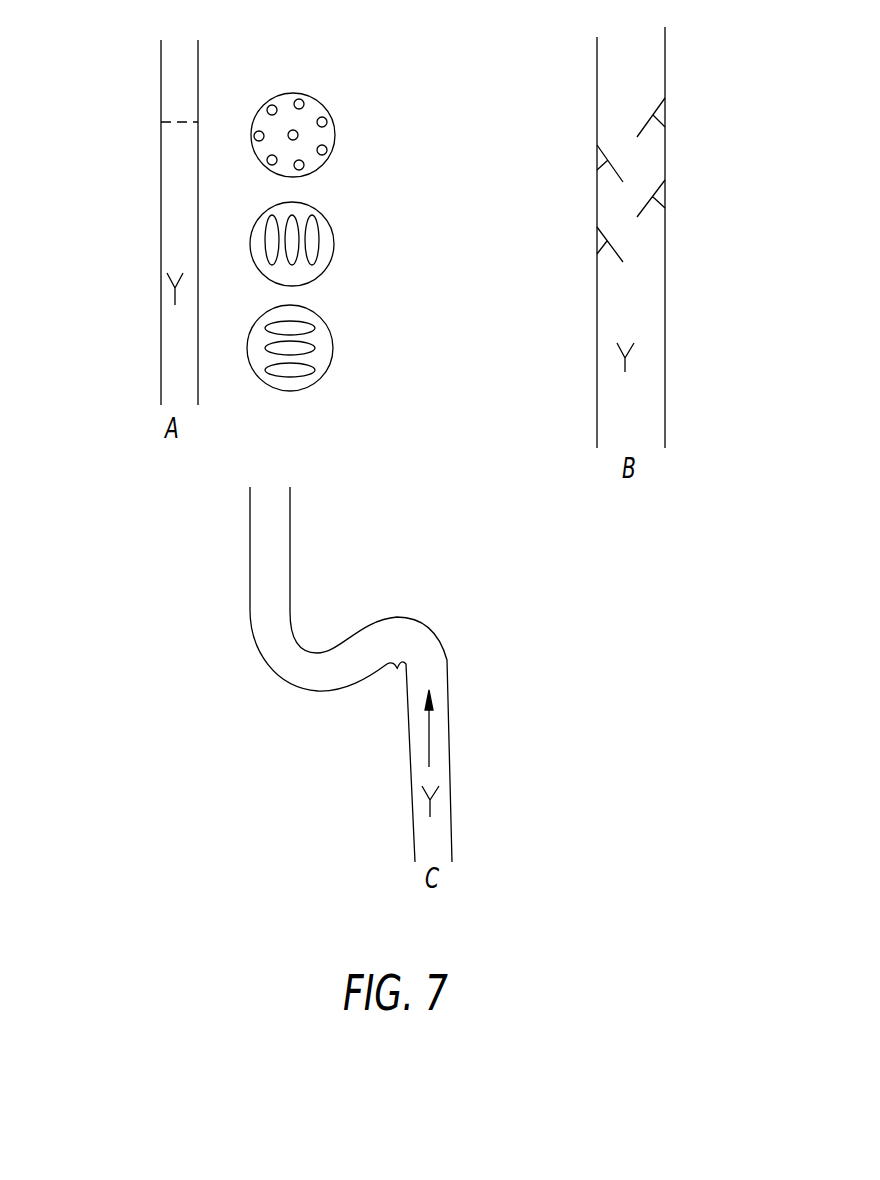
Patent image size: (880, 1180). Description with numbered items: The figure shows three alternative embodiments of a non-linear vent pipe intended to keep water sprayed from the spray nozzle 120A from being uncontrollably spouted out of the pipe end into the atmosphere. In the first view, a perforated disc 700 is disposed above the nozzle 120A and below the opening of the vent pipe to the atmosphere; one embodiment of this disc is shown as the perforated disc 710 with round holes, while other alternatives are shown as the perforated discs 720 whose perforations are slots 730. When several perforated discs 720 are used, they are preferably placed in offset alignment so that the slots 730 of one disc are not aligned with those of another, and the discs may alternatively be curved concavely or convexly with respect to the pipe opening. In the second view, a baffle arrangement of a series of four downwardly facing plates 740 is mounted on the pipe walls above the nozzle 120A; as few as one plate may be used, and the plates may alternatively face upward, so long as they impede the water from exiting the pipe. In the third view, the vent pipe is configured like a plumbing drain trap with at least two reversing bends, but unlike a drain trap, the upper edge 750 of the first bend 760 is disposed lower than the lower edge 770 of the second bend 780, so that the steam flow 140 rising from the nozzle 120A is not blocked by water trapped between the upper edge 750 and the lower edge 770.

In FIG. 7A, the perforated disc 700 is at (178, 121).
In FIG. 7A, the perforated disc embodiment 710 is at (293, 93).
In FIG. 7A, the perforated disc with slots 720 is at (333, 230).
In FIG. 7A, the slots 730 is at (272, 243).
In FIG. 7B, the downwardly facing plates 740 is at (665, 126).
In FIG. 7C, the upper edge 750 is at (433, 653).
In FIG. 7C, the first bend 760 is at (397, 669).
In FIG. 7C, the lower edge 770 is at (316, 674).
In FIG. 7C, the second bend 780 is at (320, 652).
In FIG. 7C, the steam flow 140 is at (447, 724).
In FIG. 7A, the spray nozzle 120A is at (174, 305).
In FIG. 7B, the spray nozzle 120A is at (625, 372).
In FIG. 7C, the spray nozzle 120A is at (430, 816).